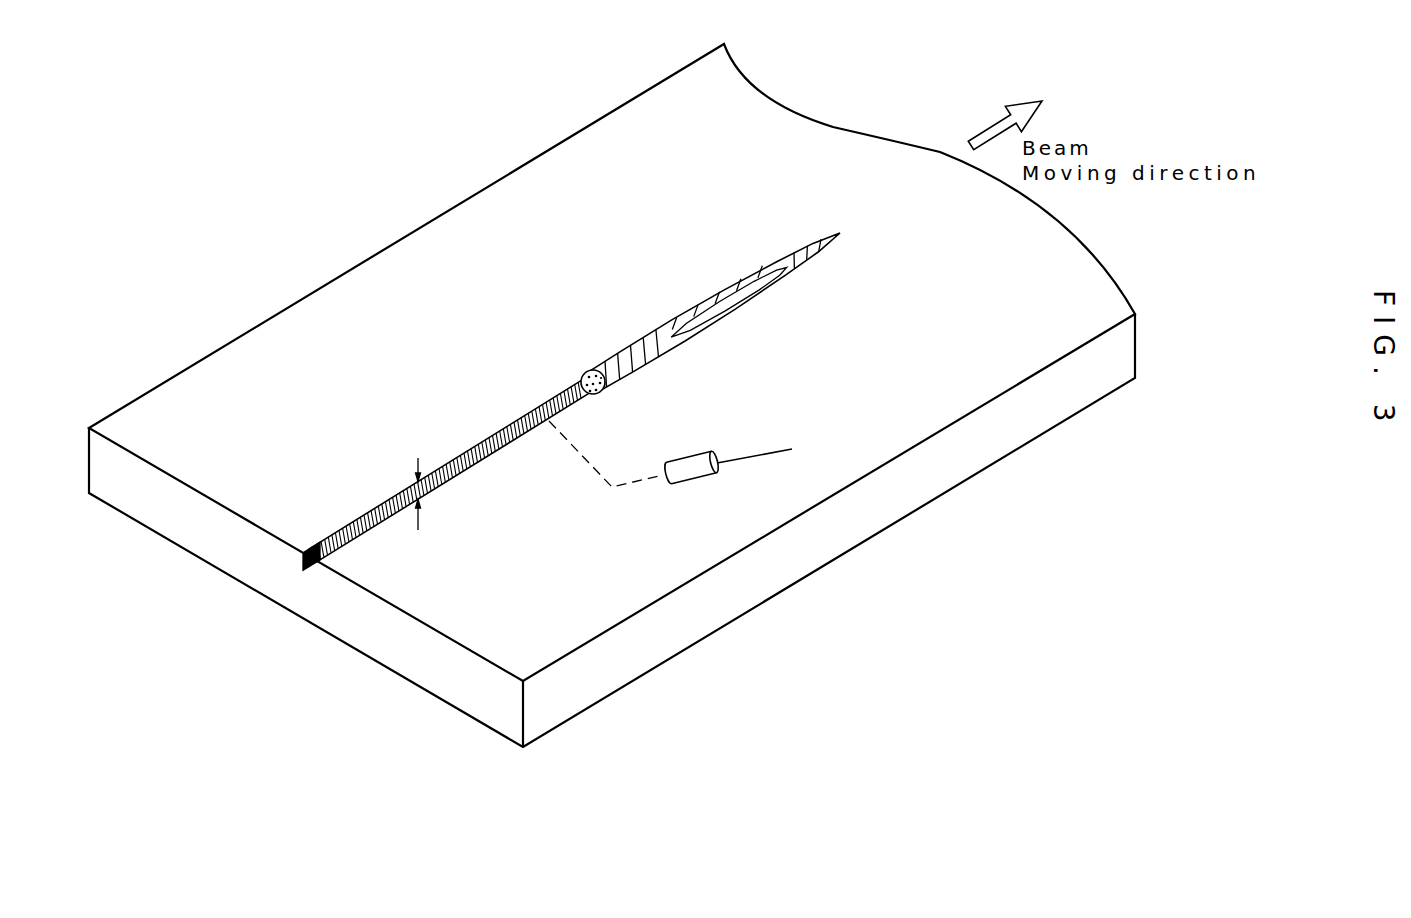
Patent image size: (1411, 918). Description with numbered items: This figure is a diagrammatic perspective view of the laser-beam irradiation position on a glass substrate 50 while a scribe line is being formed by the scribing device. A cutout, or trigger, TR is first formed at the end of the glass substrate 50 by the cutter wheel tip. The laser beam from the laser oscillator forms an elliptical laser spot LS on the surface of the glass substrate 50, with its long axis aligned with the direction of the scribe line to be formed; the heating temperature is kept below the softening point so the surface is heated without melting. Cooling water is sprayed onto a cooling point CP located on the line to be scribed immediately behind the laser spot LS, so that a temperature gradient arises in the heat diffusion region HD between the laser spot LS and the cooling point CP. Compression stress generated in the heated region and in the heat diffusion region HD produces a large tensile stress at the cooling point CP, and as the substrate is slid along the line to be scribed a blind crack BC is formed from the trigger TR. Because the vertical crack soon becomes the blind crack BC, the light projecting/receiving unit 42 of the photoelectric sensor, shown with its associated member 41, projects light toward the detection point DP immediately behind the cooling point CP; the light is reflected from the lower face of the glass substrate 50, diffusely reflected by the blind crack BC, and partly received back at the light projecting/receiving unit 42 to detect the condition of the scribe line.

The glass substrate 50 is at (427, 233).
The cutout (trigger) TR is at (308, 546).
The blind crack BC is at (452, 479).
The detection point DP is at (537, 412).
The cooling point CP is at (578, 382).
The heat diffusion region HD is at (637, 369).
The laser spot LS is at (802, 264).
The sensor support rod 41 is at (753, 454).
The light projecting/receiving unit 42 is at (695, 484).